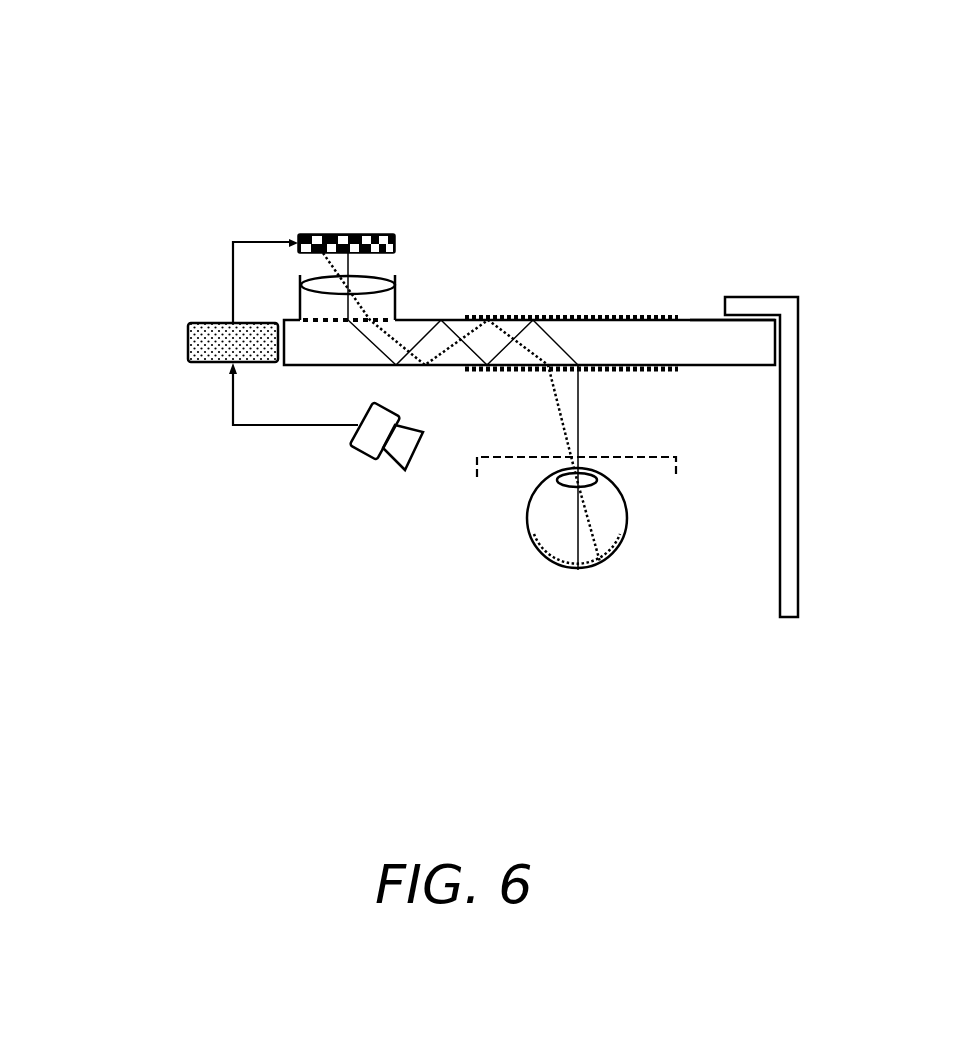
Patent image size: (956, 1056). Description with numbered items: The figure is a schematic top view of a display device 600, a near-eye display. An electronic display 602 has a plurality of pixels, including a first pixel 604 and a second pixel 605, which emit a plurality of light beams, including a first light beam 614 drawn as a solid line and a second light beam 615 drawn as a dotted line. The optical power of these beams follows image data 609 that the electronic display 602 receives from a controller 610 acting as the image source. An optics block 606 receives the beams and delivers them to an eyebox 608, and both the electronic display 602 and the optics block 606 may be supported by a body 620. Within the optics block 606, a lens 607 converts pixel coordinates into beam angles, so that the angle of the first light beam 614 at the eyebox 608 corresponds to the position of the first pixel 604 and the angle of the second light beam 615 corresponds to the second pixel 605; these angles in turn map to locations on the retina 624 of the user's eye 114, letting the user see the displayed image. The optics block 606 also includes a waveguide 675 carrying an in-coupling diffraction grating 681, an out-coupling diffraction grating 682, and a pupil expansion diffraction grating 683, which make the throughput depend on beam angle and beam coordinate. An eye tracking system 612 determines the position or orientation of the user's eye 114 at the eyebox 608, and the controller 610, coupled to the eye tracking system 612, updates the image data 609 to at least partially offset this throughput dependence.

The display device 600 is at (591, 98).
The electronic display 602 is at (383, 233).
The first pixel 604 is at (345, 233).
The second pixel 605 is at (315, 233).
The optics block 606 is at (711, 376).
The lens 607 is at (300, 283).
The eyebox 608 is at (660, 477).
The image data 609 is at (233, 255).
The controller 610 is at (188, 347).
The eye tracking system 612 is at (363, 458).
The first light beam 614 is at (457, 335).
The second light beam 615 is at (507, 333).
The body 620 is at (780, 297).
The retina 624 is at (590, 573).
The waveguide 675 is at (687, 319).
The in-coupling diffraction grating 681 is at (318, 322).
The out-coupling diffraction grating 682 is at (617, 366).
The pupil expansion diffraction grating 683 is at (562, 315).
The user's eye 114 is at (545, 560).